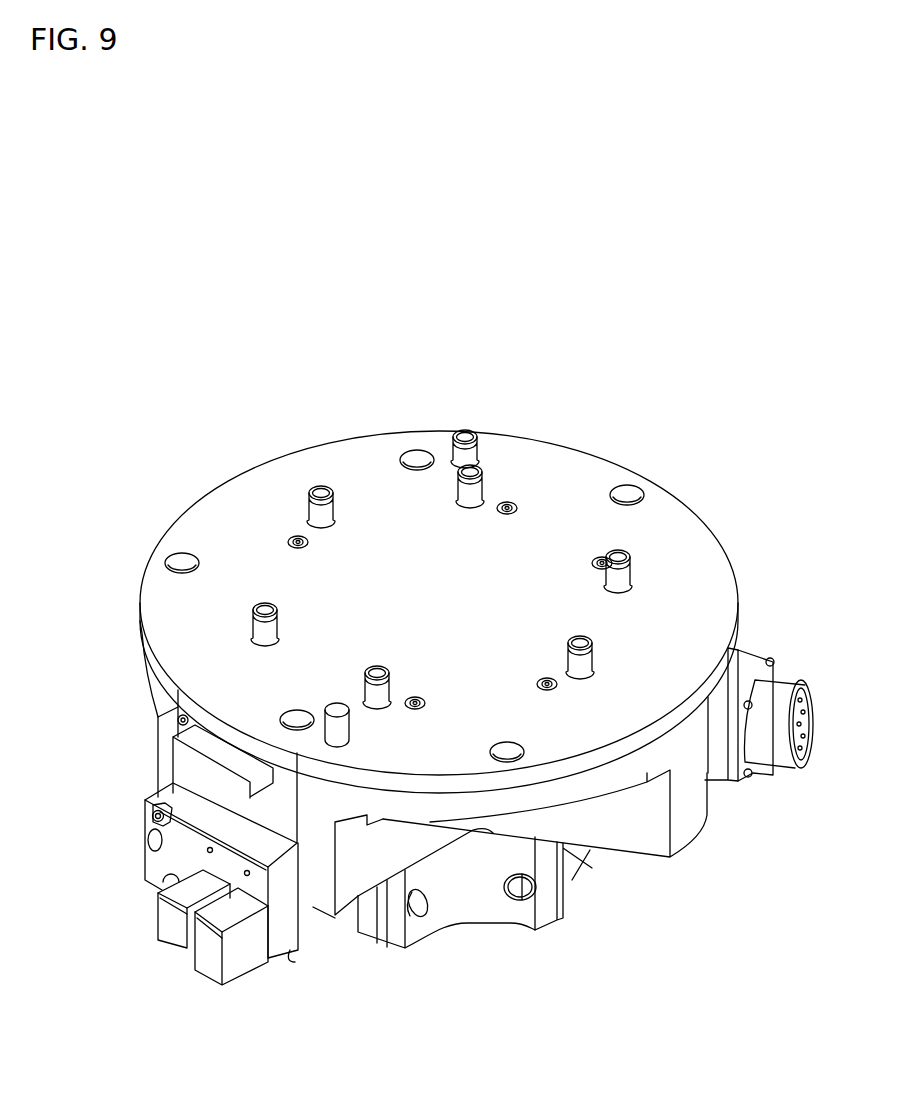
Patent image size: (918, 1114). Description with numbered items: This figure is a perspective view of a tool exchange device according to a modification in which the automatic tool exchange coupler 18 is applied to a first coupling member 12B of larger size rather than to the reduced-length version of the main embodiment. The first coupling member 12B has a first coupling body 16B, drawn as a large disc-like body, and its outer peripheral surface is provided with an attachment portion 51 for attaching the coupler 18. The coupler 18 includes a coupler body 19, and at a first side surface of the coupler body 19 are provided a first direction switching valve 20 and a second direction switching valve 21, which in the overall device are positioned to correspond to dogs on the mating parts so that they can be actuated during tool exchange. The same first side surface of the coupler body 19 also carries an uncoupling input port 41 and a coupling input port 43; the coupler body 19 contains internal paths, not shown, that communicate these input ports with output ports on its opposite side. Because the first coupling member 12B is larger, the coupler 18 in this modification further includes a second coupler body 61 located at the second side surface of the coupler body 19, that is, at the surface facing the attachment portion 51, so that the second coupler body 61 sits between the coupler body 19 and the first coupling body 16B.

The first coupling member 12B is at (700, 509).
The first coupling body 16B is at (271, 495).
The automatic tool exchange coupler 18 is at (147, 791).
The coupler body 19 is at (213, 823).
The first direction switching valve 20 is at (158, 932).
The second direction switching valve 21 is at (207, 953).
The uncoupling input port 41 is at (158, 842).
The coupling input port 43 is at (150, 883).
The attachment portion 51 is at (264, 766).
The second coupler body 61 is at (207, 772).